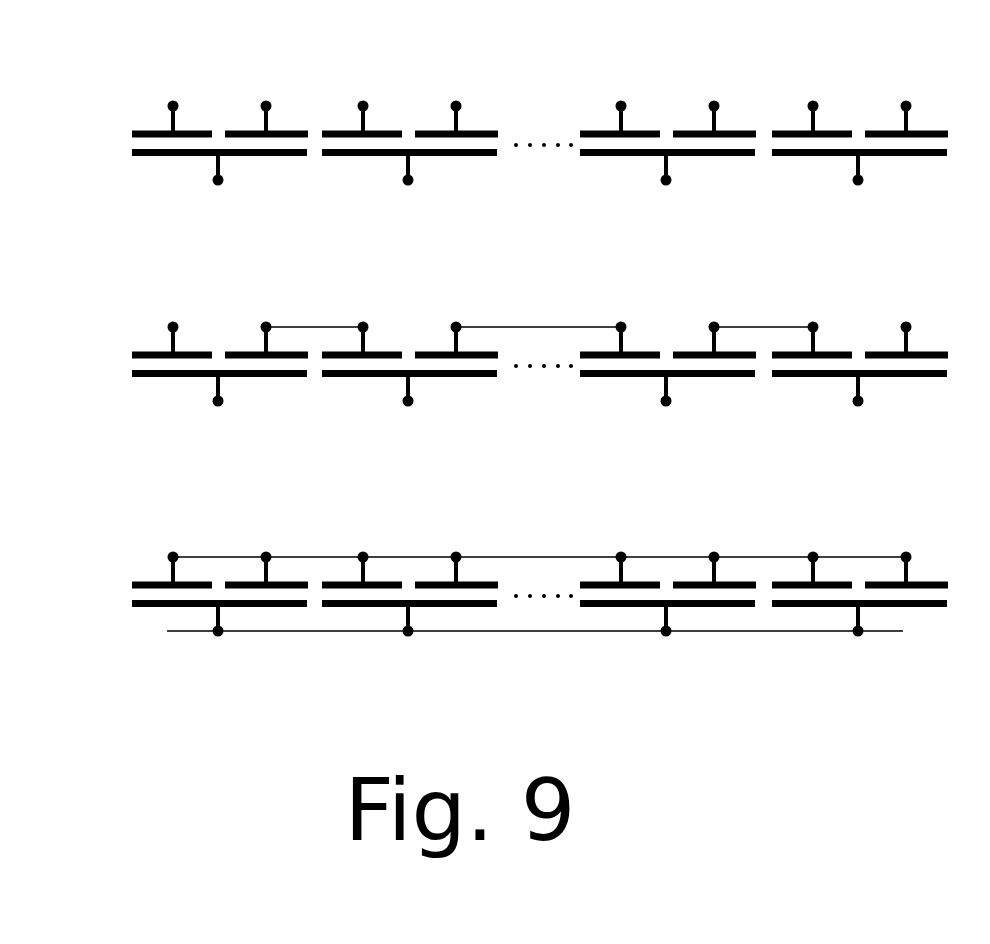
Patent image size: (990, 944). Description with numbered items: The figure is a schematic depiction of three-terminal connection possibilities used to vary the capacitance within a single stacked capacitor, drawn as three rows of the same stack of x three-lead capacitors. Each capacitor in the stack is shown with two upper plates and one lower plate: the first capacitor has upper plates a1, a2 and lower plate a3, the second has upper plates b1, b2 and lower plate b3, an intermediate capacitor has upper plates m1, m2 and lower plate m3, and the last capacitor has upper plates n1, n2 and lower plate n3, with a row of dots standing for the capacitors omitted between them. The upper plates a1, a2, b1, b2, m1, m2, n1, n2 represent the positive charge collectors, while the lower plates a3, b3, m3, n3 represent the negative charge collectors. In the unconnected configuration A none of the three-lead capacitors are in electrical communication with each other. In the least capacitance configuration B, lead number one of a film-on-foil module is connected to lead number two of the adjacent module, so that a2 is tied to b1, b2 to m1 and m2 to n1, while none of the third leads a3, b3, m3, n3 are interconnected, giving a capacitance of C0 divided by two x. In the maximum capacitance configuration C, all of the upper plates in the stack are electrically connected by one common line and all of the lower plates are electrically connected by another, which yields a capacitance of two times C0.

The unconnected configuration A is at (36, 150).
The least capacitance configuration B is at (36, 371).
The maximum capacitance configuration C is at (36, 601).
The upper plate a1 is at (175, 331).
The upper plate a2 is at (268, 331).
The lower plate a3 is at (225, 414).
The upper plate b1 is at (366, 331).
The upper plate b2 is at (459, 331).
The lower plate b3 is at (416, 414).
The upper plate m1 is at (622, 331).
The upper plate m2 is at (716, 331).
The lower plate m3 is at (671, 414).
The upper plate n1 is at (815, 331).
The upper plate n2 is at (908, 331).
The lower plate n3 is at (864, 414).